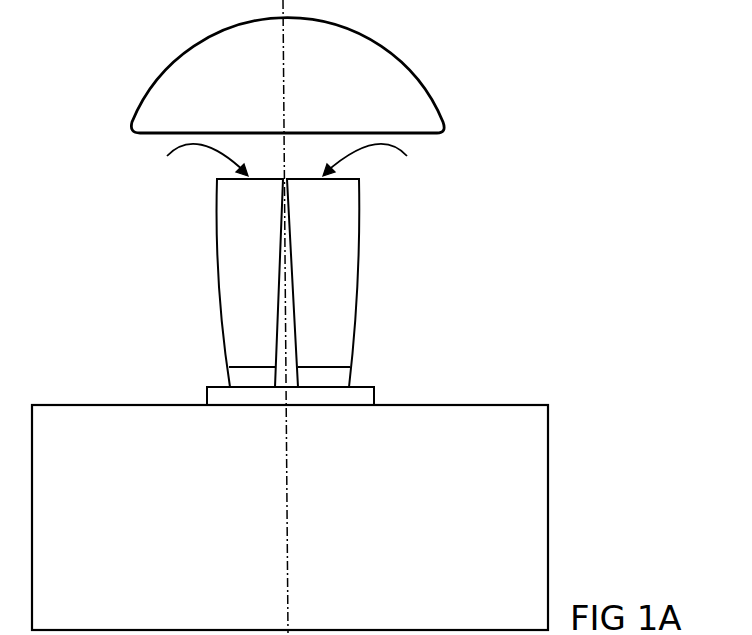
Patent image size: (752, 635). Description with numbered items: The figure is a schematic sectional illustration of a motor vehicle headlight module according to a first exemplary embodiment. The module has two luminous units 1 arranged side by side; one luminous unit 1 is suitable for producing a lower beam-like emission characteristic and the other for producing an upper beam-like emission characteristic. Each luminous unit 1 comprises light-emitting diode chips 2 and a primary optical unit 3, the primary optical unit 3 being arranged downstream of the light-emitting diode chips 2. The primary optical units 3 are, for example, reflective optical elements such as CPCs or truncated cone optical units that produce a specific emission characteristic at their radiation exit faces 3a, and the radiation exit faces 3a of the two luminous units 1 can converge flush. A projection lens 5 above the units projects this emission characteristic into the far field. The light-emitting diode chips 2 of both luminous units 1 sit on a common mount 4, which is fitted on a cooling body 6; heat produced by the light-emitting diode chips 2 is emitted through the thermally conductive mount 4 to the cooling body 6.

The luminous unit 1 is at (142, 250).
The light-emitting diode chip 2 is at (242, 378).
The primary optical unit 3 is at (242, 268).
The radiation exit face 3a is at (286, 166).
The mount 4 is at (363, 397).
The projection lens 5 is at (405, 83).
The cooling body 6 is at (517, 520).